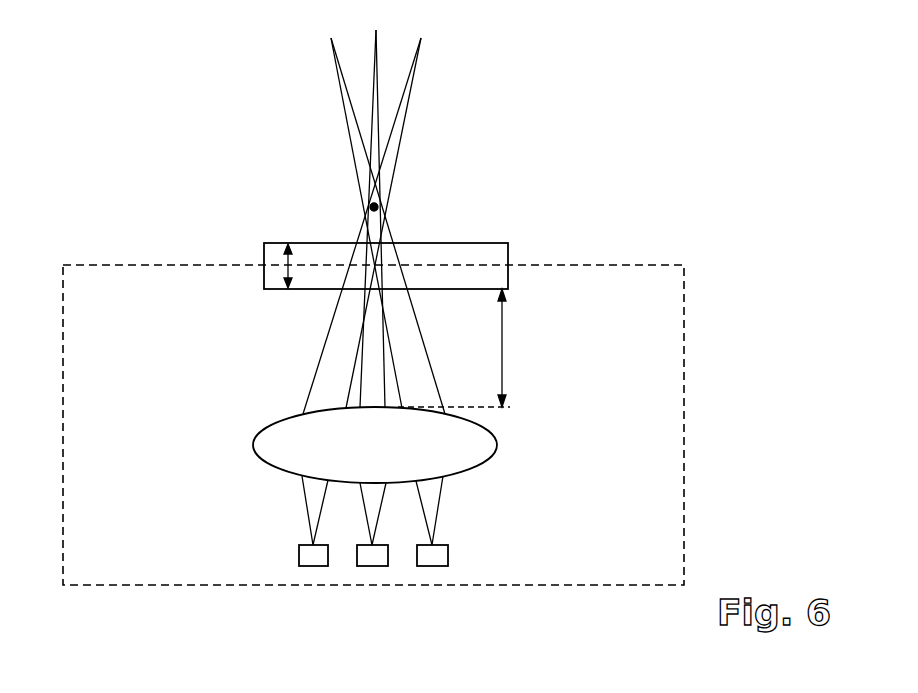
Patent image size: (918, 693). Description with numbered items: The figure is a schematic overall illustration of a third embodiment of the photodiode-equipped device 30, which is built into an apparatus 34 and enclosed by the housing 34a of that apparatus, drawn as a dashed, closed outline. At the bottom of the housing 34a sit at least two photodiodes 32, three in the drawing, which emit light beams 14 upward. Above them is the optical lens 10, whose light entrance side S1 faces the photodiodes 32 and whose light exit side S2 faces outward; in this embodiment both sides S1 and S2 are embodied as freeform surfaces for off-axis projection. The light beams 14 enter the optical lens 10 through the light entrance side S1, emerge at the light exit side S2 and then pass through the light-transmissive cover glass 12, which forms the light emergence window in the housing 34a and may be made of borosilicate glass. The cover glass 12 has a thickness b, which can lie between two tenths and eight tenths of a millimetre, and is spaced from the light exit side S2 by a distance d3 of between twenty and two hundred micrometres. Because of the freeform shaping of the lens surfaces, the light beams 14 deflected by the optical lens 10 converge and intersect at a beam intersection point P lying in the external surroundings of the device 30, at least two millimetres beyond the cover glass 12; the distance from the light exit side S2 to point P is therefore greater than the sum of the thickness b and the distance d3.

The optical lens 10 is at (275, 446).
The light-transmissive cover glass 12 is at (494, 257).
The light beams 14 is at (376, 89).
The photodiode-equipped device 30 is at (189, 408).
The photodiodes 32 is at (315, 567).
The apparatus 34 is at (717, 401).
The housing 34a is at (686, 298).
The beam intersection point P is at (378, 204).
The thickness of the light-transmissive cover glass b is at (285, 265).
The distance between the light-transmissive cover glass and the light exit side d3 is at (512, 347).
The light entrance side S1 is at (466, 478).
The light exit side S2 is at (266, 415).